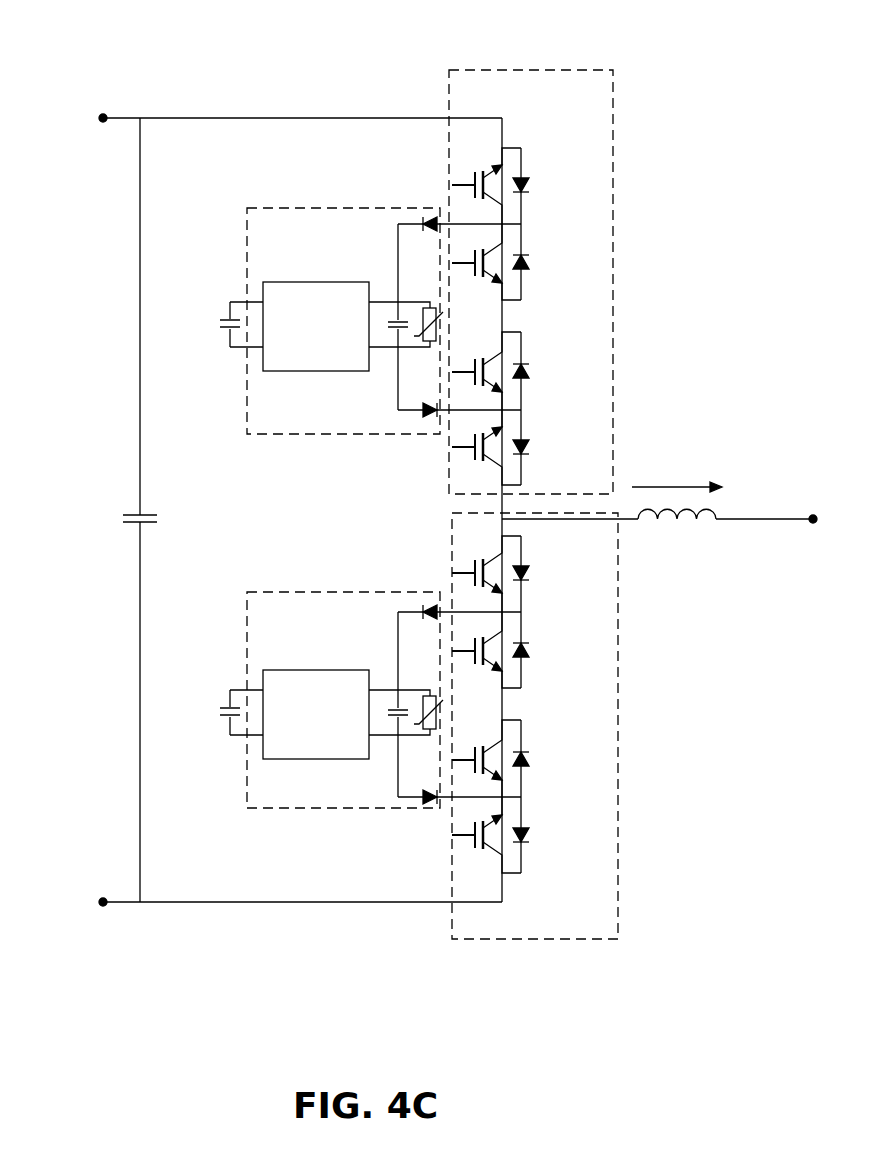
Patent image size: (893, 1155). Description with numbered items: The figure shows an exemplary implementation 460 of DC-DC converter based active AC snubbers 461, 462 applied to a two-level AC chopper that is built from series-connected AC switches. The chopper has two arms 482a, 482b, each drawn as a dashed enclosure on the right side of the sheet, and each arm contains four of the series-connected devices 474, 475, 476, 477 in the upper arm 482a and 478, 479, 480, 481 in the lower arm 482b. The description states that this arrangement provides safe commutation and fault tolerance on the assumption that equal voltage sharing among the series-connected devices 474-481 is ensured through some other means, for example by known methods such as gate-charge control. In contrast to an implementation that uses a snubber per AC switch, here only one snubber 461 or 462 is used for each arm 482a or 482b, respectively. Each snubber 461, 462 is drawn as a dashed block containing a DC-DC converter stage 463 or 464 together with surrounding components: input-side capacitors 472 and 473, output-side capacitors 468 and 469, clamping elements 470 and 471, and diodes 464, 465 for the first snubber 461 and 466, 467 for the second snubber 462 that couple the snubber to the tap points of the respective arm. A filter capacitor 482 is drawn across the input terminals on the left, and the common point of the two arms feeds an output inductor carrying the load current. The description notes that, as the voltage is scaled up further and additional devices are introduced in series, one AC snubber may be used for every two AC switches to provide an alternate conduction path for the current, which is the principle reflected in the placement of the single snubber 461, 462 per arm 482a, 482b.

The implementation 460 is at (270, 60).
The active AC snubber 461 is at (273, 208).
The active AC snubber 462 is at (265, 592).
The first converter CONV 1 463 is at (330, 326).
The diode 464 is at (432, 222).
The diode 465 is at (435, 414).
The diode 466 is at (432, 610).
The diode 467 is at (435, 802).
The capacitor 468 is at (397, 306).
The capacitor 469 is at (397, 694).
The varistor 470 is at (432, 310).
The varistor 471 is at (432, 698).
The capacitor 472 is at (222, 320).
The capacitor 473 is at (226, 708).
The series-connected device 474 is at (525, 192).
The series-connected device 475 is at (525, 268).
The series-connected device 476 is at (525, 371).
The series-connected device 477 is at (525, 445).
The series-connected device 478 is at (525, 580).
The series-connected device 479 is at (525, 656).
The series-connected device 480 is at (525, 759).
The series-connected device 481 is at (525, 834).
The filter capacitor CF 482 is at (126, 516).
The arm 482a is at (531, 282).
The arm 482b is at (535, 726).